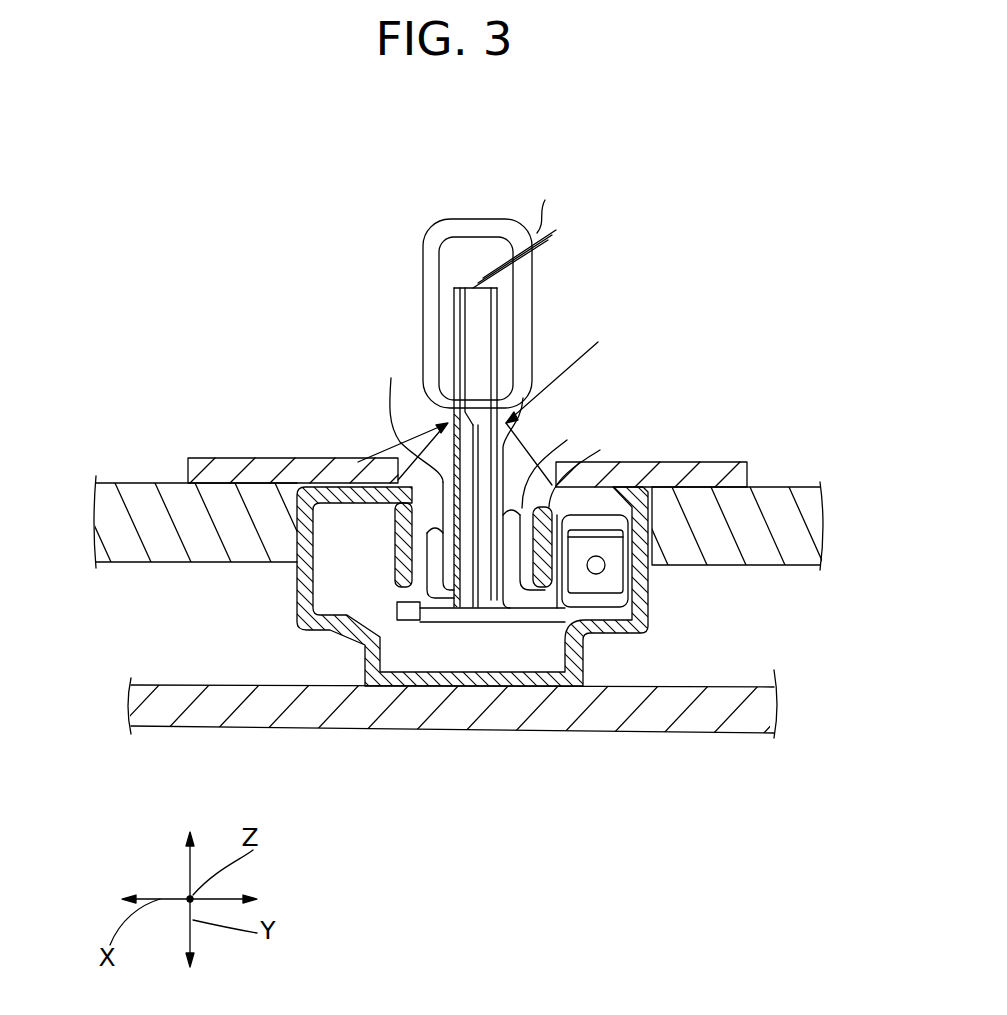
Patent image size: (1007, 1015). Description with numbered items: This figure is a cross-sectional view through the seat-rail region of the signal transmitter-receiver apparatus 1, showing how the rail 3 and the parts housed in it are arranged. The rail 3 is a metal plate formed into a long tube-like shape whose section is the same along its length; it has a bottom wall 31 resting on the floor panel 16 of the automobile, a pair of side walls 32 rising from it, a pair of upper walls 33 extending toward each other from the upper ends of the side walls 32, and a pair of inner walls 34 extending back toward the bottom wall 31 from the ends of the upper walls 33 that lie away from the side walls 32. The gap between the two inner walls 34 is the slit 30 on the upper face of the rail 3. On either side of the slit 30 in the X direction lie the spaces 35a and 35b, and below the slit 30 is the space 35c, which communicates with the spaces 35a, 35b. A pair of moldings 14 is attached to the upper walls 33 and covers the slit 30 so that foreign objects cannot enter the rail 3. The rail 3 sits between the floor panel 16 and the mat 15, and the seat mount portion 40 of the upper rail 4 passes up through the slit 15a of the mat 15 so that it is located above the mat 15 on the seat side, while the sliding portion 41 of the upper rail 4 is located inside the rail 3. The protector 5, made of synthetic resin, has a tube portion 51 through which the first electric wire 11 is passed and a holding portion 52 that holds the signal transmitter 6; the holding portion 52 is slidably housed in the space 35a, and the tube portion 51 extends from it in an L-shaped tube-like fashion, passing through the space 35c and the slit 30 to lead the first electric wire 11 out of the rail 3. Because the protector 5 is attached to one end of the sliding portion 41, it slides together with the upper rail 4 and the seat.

The signal transmitter-receiver apparatus 1 is at (122, 308).
The rail 3 is at (328, 638).
The upper rail 4 is at (425, 298).
The protector 5 is at (460, 287).
The signal transmitter 6 is at (653, 572).
The first electric wire 11 is at (515, 228).
The molding 14 is at (212, 458).
The mat 15 is at (795, 490).
The slit of the mat 15a is at (683, 484).
The floor panel 16 is at (638, 704).
The slit 30 is at (559, 459).
The bottom wall 31 is at (481, 676).
The side wall 32 is at (296, 600).
The upper wall 33 is at (390, 490).
The inner wall 34 is at (397, 518).
The space 35a is at (655, 517).
The space 35b is at (330, 556).
The space 35c is at (437, 650).
The seat mount portion 40 is at (422, 268).
The sliding portion 41 is at (415, 385).
The tube portion 51 is at (497, 342).
The holding portion 52 is at (657, 547).